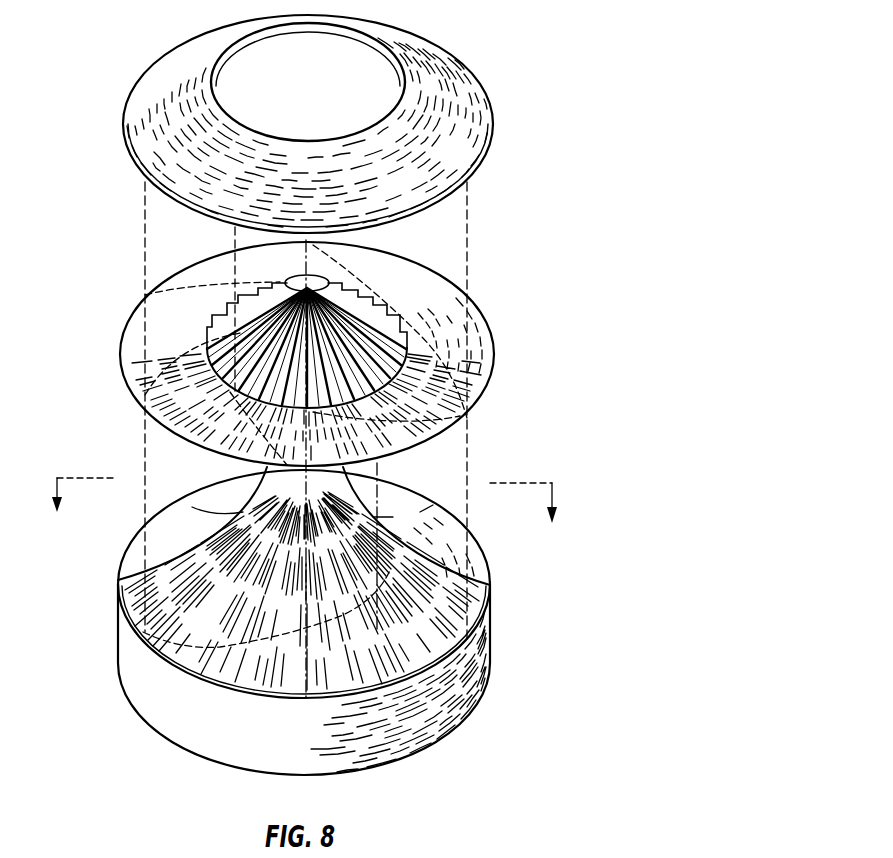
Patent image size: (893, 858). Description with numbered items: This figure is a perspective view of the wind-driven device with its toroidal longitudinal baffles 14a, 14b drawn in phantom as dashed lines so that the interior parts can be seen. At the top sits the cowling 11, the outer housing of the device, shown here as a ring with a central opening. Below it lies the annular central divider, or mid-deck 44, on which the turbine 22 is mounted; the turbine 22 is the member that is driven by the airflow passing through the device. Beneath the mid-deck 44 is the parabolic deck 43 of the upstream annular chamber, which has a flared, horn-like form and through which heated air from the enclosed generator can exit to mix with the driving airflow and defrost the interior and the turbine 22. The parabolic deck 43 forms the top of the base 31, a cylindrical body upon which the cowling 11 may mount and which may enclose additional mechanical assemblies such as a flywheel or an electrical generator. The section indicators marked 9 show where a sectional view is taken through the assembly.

The cowling 11 is at (453, 55).
The baffle 14a is at (468, 442).
The baffle 14b is at (143, 240).
The turbine 22 is at (377, 322).
The annular central divider (mid-deck) 44 is at (490, 343).
The parabolic deck 43 is at (490, 587).
The base 31 is at (490, 648).
The section line 9- 9 is at (304, 516).